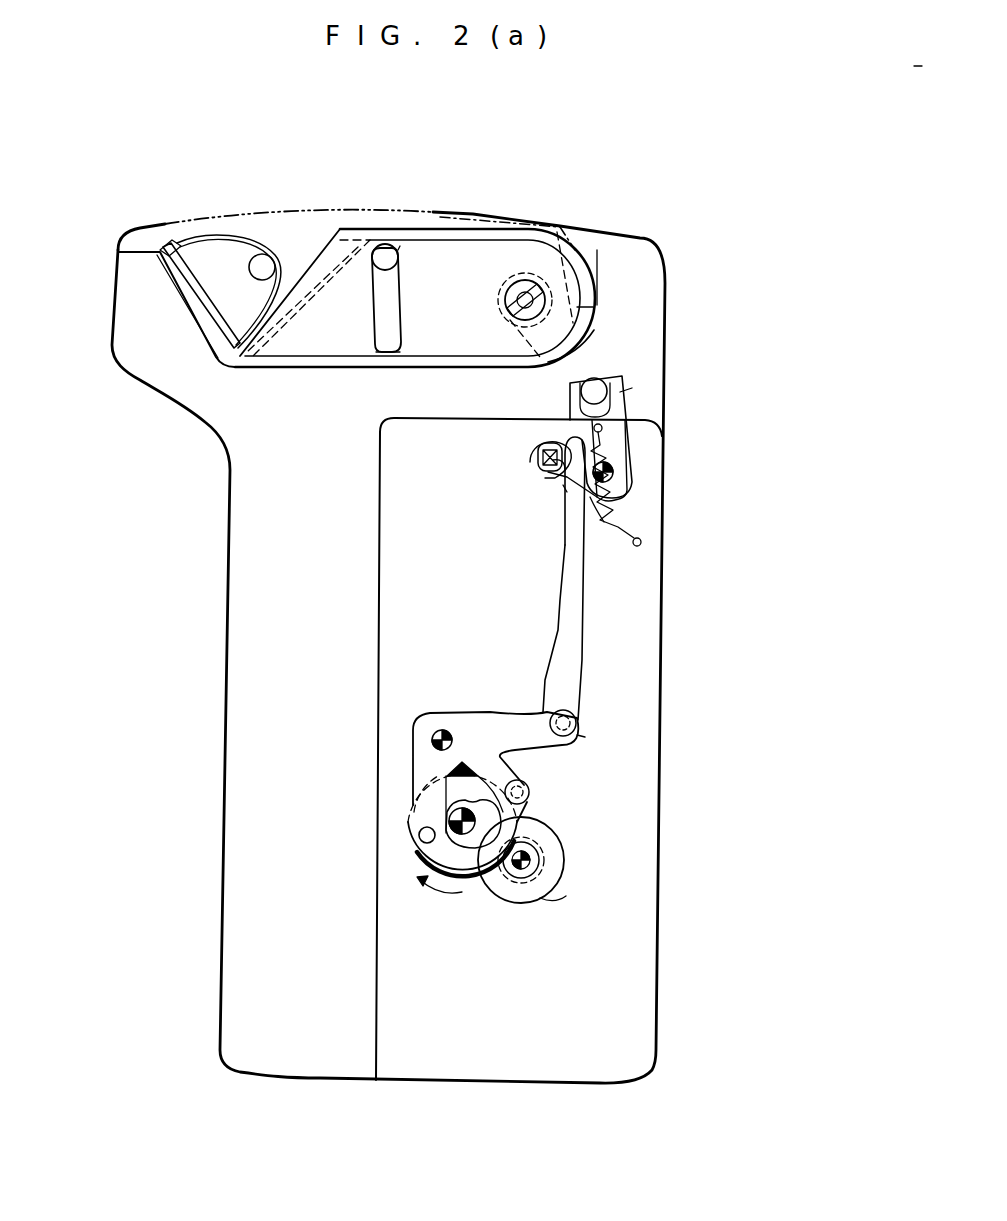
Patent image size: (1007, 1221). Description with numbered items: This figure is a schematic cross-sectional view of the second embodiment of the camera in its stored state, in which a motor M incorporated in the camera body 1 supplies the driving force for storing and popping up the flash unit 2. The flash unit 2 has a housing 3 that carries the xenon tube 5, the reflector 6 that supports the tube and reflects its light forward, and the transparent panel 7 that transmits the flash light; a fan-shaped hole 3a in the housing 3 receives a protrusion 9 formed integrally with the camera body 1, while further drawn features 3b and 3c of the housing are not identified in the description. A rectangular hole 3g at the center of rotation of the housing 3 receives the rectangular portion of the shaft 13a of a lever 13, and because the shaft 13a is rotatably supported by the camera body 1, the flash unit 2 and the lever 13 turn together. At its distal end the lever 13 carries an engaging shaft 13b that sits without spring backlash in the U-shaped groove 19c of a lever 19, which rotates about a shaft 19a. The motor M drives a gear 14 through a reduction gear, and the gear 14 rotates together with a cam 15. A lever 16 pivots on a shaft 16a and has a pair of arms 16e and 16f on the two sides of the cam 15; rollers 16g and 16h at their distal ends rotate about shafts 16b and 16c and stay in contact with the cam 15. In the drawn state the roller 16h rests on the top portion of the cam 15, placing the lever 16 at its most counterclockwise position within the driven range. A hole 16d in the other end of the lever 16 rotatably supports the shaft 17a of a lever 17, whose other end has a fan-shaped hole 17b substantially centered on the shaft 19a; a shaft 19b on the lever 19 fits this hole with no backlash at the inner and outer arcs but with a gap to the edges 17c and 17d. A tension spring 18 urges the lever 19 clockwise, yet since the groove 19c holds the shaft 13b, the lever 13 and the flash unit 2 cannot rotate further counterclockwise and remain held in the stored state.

The camera body 1 is at (230, 645).
The flash unit 2 is at (310, 206).
The housing 3 is at (487, 247).
The fan-shaped hole 3a is at (393, 298).
The lever bar lower end 3b is at (378, 366).
The lever pivot 3c is at (383, 245).
The rectangular hole 3g is at (534, 294).
The xenon tube 5 is at (254, 262).
The reflector 6 is at (207, 238).
The transparent panel 7 is at (167, 247).
The protrusion 9 is at (400, 245).
The lever 13 is at (583, 360).
The shaft 13a is at (518, 291).
The engaging shaft 13b is at (604, 386).
The gear 14 is at (484, 853).
The cam 15 is at (558, 840).
The lever 16 is at (484, 702).
The shaft 16a is at (442, 728).
The shaft 16b is at (419, 839).
The shaft 16c is at (530, 787).
The hole 16d is at (578, 721).
The arm 16e is at (412, 803).
The arm 16f is at (513, 767).
The roller 16g is at (422, 862).
The roller 16h is at (480, 825).
The lever 17 is at (590, 617).
The shaft 17a is at (590, 738).
The fan-shaped hole 17b is at (537, 444).
The edge 17c is at (570, 490).
The edge 17d is at (567, 435).
The tension spring 18 is at (628, 512).
The lever 19 is at (637, 407).
The shaft 19a is at (590, 497).
The shaft 19b is at (536, 466).
The U-shaped groove 19c is at (622, 397).
The motor M is at (562, 885).